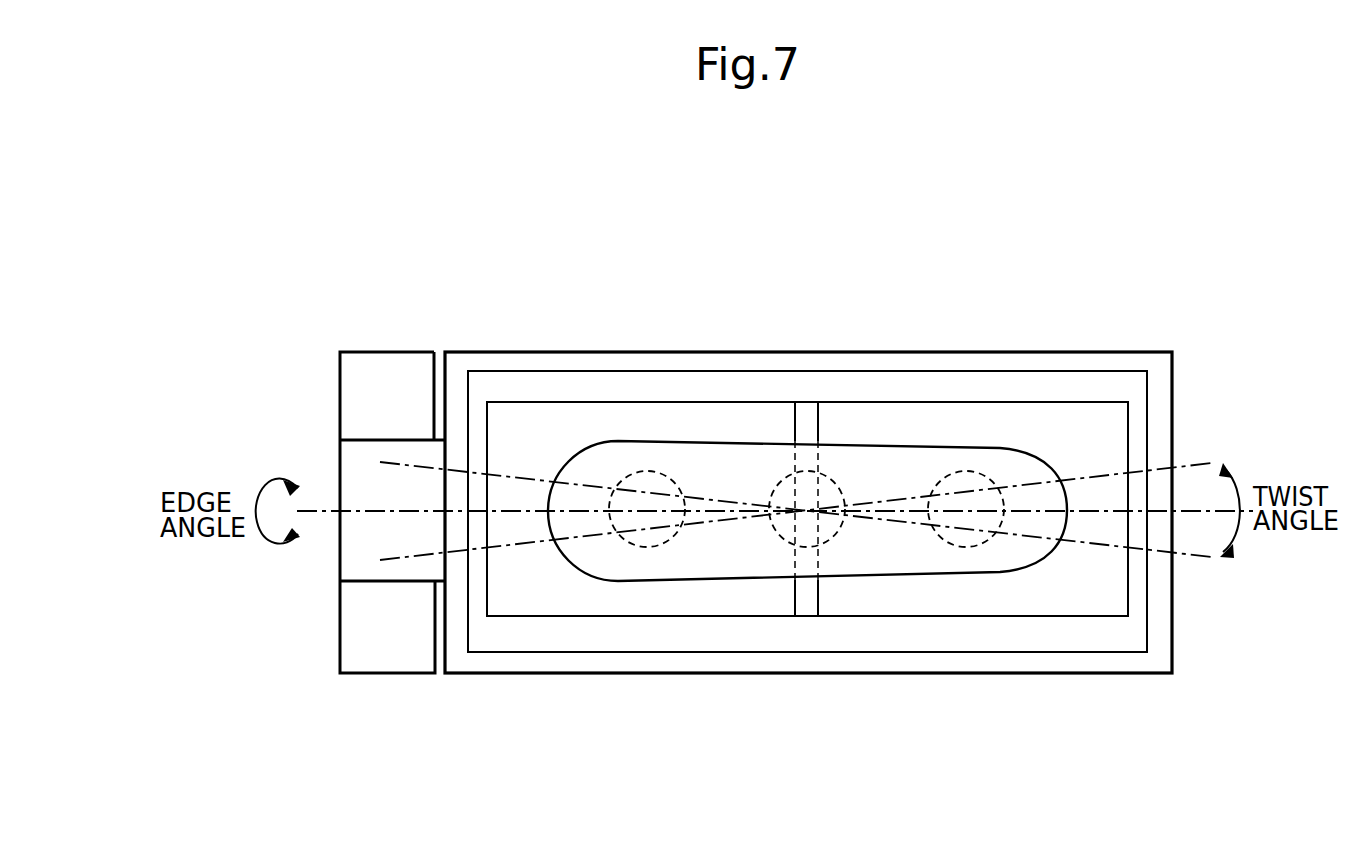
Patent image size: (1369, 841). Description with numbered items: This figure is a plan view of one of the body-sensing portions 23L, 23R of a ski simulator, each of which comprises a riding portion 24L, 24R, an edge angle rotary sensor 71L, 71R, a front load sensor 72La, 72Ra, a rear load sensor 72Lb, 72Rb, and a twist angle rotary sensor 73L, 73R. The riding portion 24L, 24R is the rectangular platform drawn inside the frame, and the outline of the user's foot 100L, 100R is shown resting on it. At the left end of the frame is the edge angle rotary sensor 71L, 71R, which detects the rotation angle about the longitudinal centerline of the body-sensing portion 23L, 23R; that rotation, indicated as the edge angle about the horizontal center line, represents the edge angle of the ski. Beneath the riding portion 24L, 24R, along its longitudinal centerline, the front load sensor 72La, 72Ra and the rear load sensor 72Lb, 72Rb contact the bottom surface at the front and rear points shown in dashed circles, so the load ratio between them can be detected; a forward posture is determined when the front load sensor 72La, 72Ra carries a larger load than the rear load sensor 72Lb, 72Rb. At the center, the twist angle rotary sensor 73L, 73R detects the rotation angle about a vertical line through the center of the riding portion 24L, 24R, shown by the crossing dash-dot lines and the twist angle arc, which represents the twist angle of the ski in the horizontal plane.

The body-sensing portion 23L is at (725, 415).
The body-sensing portion 23R is at (536, 300).
The riding portion 24L is at (832, 445).
The riding portion 24R is at (960, 415).
The edge angle rotary sensor 71L is at (263, 483).
The edge angle rotary sensor 71R is at (353, 405).
The foot 100L is at (807, 427).
The foot 100R is at (740, 441).
The front load sensor 72La is at (516, 614).
The front load sensor 72Ra is at (647, 547).
The twist angle rotary sensor 73L is at (819, 614).
The twist angle rotary sensor 73R is at (777, 539).
The rear load sensor 72Lb is at (1091, 614).
The rear load sensor 72Rb is at (993, 535).